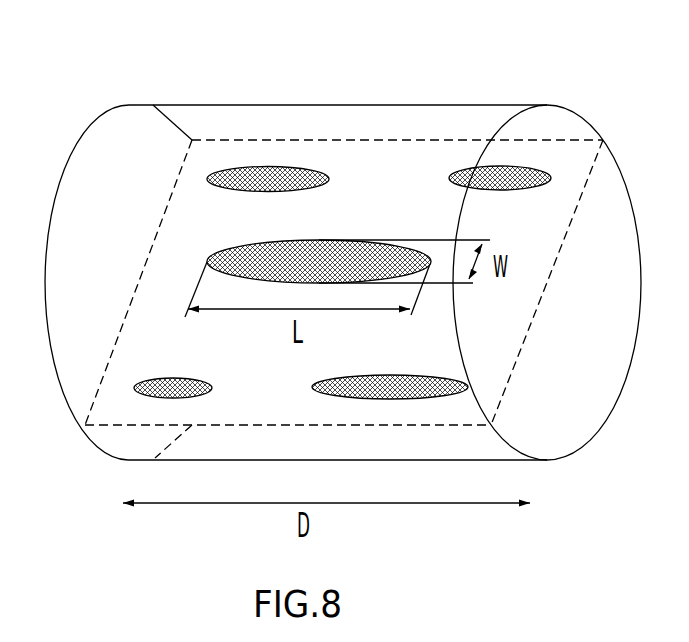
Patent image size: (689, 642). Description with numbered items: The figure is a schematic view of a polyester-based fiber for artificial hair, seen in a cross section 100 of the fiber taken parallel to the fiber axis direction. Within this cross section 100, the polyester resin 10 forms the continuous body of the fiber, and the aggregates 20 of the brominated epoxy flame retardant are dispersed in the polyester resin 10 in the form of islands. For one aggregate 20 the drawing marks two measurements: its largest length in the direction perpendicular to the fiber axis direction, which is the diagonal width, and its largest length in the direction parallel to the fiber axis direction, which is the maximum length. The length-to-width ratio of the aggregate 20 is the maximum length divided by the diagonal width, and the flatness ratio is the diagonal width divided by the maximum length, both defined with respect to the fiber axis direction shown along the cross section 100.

The cross section 100 is at (343, 238).
The polyester resin 10 is at (398, 167).
The aggregates of the brominated epoxy flame retardant 20 is at (320, 237).